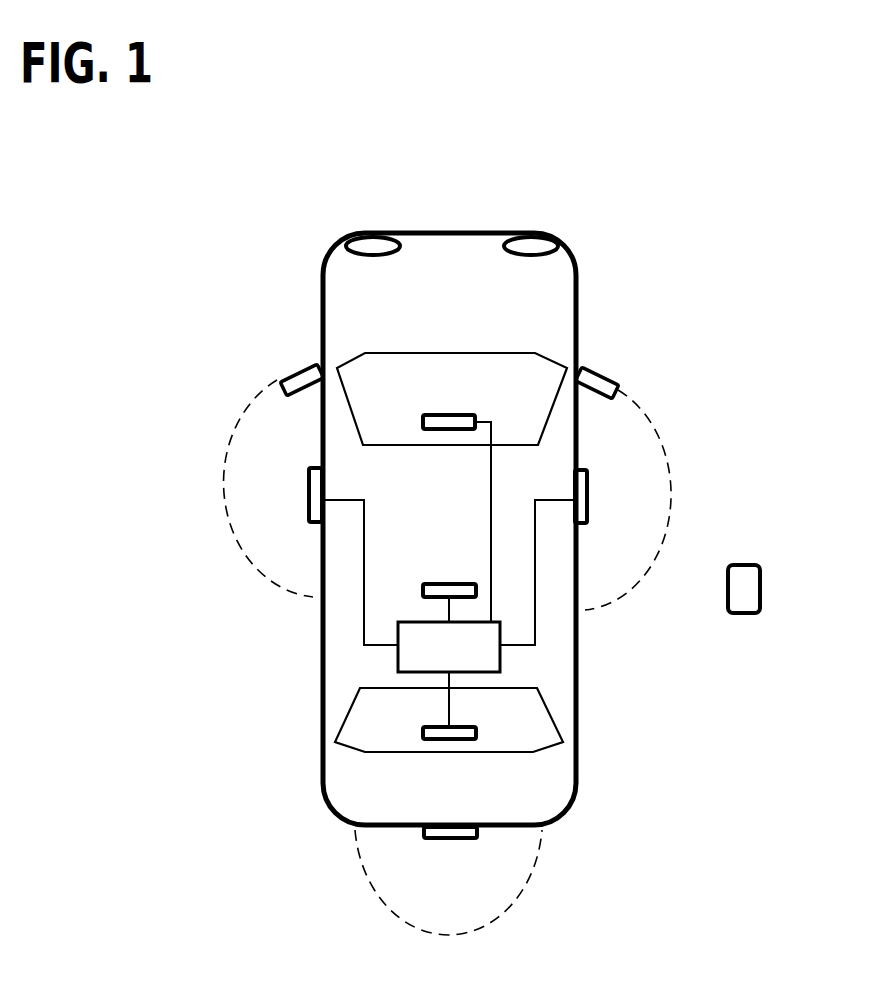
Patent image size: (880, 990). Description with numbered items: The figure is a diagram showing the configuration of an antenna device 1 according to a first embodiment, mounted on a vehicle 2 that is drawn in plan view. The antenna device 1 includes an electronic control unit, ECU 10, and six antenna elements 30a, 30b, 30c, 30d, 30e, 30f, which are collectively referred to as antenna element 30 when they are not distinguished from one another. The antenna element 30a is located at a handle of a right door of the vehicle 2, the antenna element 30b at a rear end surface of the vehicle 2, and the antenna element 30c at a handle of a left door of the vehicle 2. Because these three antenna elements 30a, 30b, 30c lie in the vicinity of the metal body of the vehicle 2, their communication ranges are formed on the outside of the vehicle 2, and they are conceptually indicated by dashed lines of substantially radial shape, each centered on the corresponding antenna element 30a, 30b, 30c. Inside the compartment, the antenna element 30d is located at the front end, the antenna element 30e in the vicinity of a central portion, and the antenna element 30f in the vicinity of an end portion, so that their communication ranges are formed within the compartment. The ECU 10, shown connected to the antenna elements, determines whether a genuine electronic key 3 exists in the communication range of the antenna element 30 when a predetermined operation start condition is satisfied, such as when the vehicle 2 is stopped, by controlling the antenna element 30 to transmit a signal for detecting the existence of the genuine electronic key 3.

The antenna device 1 is at (209, 273).
The vehicle 2 is at (577, 268).
The genuine electronic key 3 is at (742, 565).
The electronic control unit (ECU) 10 is at (398, 620).
The antenna element 30 is at (448, 630).
The antenna element 30a is at (588, 487).
The antenna element 30b is at (458, 840).
The antenna element 30c is at (309, 483).
The antenna element 30d is at (462, 413).
The antenna element 30e is at (440, 583).
The antenna element 30f is at (463, 741).